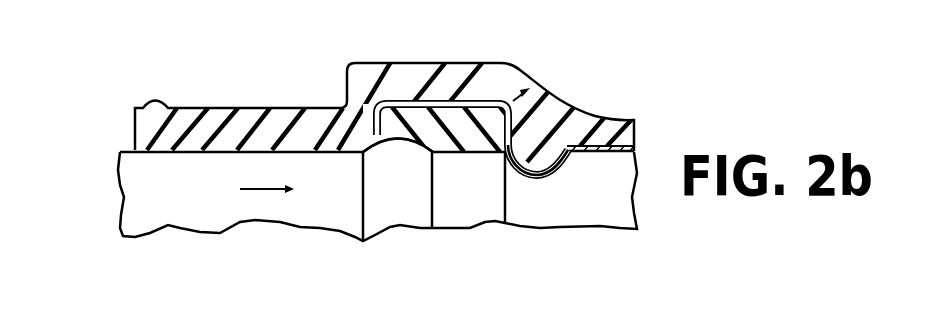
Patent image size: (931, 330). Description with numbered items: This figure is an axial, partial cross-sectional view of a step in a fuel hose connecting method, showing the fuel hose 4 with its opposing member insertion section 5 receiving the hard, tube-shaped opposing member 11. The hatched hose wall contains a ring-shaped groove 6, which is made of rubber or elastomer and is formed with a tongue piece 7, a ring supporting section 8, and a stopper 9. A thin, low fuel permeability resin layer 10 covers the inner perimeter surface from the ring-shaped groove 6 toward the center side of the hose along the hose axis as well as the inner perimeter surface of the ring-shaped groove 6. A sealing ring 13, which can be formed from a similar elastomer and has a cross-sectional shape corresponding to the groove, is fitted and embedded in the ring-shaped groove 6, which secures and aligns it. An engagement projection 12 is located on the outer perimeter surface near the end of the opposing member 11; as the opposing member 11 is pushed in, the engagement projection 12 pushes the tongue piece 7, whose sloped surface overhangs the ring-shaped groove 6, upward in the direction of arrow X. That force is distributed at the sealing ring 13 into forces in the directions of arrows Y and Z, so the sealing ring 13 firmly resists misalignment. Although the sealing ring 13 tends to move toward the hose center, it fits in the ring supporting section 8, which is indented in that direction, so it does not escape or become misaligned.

The fuel hose 4 is at (612, 114).
The opposing member insertion section 5 is at (206, 108).
The ring-shaped groove 6 is at (394, 121).
The tongue piece 7 is at (368, 134).
The ring supporting section 8 is at (479, 128).
The stopper 9 is at (547, 153).
The low fuel permeability resin layer 10 is at (480, 118).
The opposing member 11 is at (220, 242).
The engagement projection 12 is at (403, 218).
The sealing ring 13 is at (437, 102).